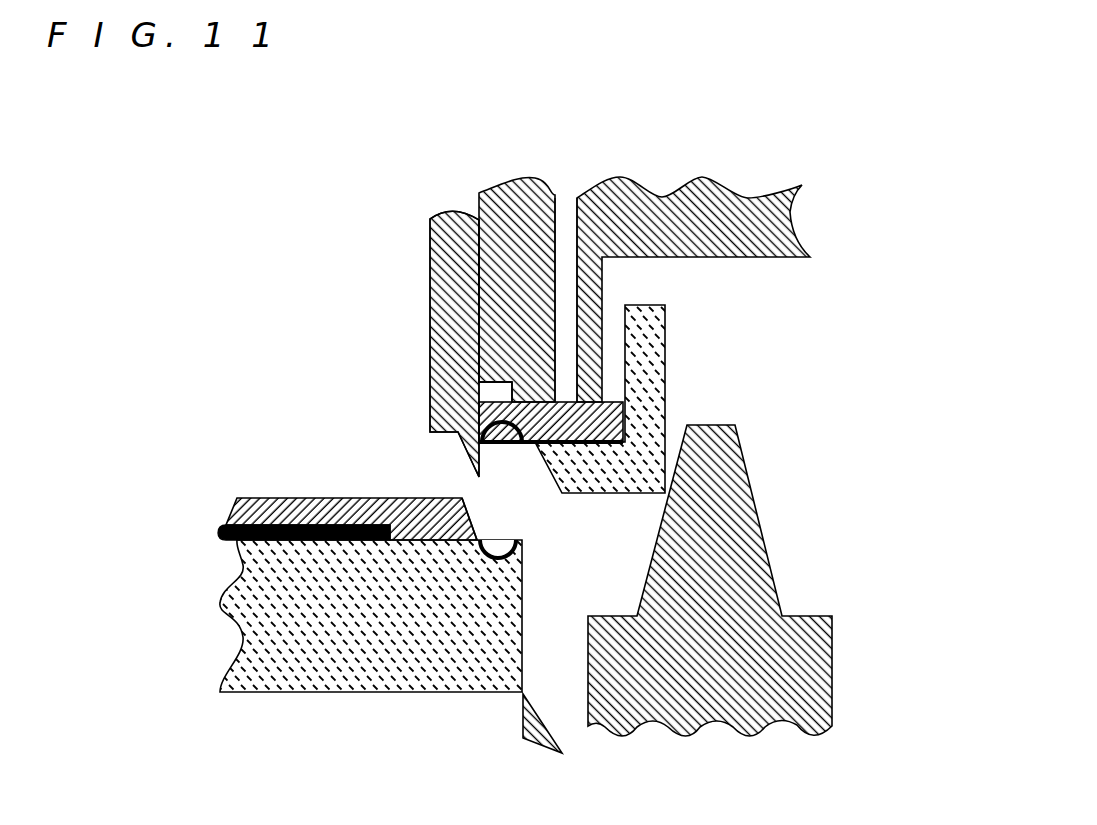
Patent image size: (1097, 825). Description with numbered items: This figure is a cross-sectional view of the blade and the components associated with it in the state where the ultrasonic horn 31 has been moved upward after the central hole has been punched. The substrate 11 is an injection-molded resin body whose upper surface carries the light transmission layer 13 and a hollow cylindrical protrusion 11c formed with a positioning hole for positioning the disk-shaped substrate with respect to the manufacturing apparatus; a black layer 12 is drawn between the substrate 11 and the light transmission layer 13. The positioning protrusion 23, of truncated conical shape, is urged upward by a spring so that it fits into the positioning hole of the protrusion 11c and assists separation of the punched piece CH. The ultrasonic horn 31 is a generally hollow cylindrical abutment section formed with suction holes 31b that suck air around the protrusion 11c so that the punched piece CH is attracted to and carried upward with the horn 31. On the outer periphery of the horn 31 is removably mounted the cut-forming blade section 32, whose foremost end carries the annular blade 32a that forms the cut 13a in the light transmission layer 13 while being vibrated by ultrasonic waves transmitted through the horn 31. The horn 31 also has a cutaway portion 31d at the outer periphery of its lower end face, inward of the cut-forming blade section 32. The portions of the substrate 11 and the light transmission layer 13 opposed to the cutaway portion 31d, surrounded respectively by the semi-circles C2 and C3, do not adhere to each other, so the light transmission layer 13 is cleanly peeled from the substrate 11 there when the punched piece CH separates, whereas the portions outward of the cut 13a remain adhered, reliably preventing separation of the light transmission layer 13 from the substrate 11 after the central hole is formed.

The substrate 11 is at (253, 617).
The hollow cylindrical protrusion 11c is at (648, 380).
The electrode layer 12 is at (222, 532).
The light transmission layer 13 is at (238, 503).
The cut 13a is at (483, 513).
The positioning protrusion 23 is at (768, 553).
The ultrasonic horn 31 is at (485, 207).
The suction hole 31b is at (563, 199).
The cutaway portion 31d is at (494, 384).
The cut-forming blade section 32 is at (443, 255).
The blade 32a is at (445, 395).
The punched piece CH is at (713, 328).
The semi-circle C2 is at (498, 528).
The semi-circle C3 is at (498, 456).